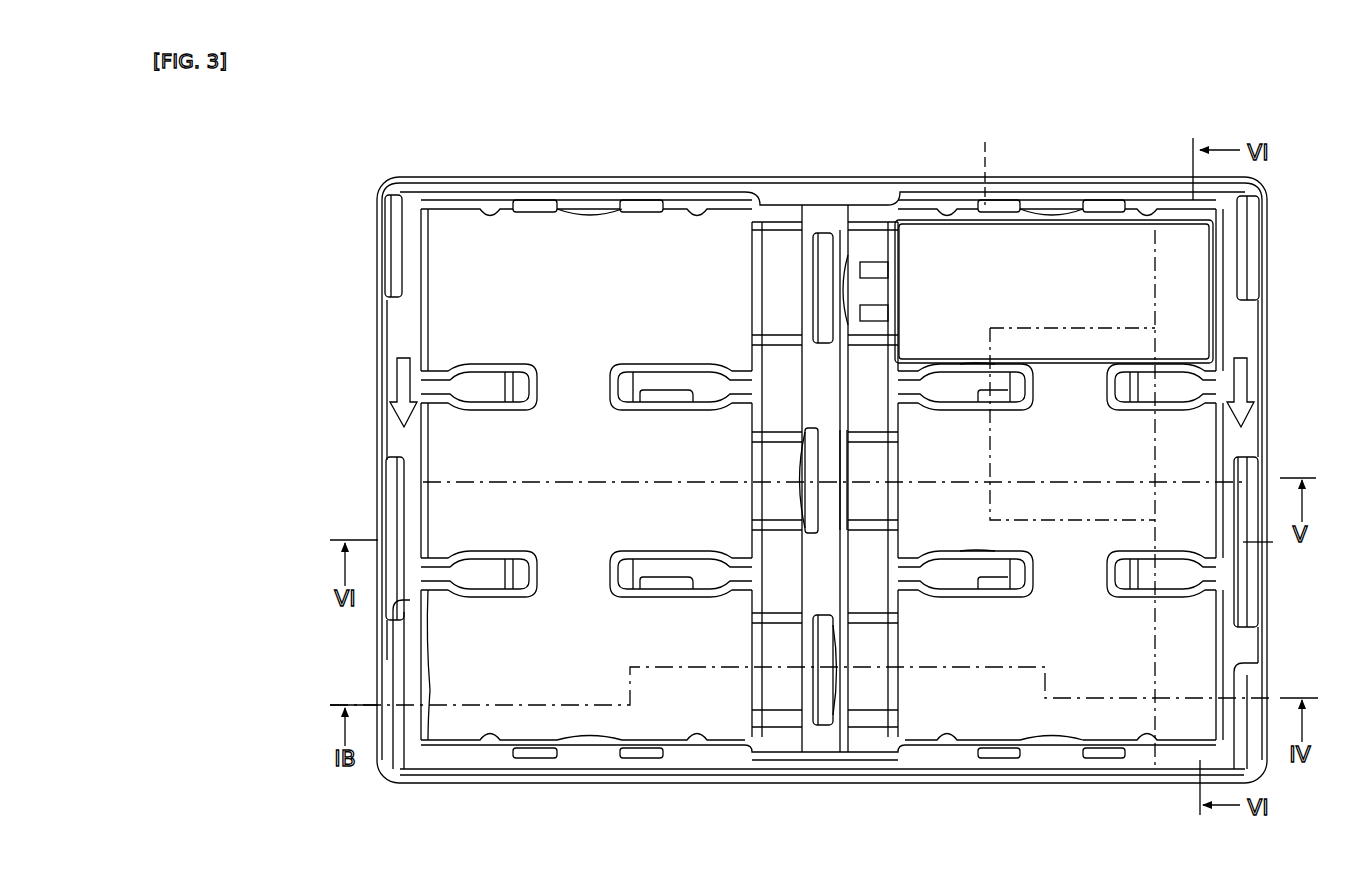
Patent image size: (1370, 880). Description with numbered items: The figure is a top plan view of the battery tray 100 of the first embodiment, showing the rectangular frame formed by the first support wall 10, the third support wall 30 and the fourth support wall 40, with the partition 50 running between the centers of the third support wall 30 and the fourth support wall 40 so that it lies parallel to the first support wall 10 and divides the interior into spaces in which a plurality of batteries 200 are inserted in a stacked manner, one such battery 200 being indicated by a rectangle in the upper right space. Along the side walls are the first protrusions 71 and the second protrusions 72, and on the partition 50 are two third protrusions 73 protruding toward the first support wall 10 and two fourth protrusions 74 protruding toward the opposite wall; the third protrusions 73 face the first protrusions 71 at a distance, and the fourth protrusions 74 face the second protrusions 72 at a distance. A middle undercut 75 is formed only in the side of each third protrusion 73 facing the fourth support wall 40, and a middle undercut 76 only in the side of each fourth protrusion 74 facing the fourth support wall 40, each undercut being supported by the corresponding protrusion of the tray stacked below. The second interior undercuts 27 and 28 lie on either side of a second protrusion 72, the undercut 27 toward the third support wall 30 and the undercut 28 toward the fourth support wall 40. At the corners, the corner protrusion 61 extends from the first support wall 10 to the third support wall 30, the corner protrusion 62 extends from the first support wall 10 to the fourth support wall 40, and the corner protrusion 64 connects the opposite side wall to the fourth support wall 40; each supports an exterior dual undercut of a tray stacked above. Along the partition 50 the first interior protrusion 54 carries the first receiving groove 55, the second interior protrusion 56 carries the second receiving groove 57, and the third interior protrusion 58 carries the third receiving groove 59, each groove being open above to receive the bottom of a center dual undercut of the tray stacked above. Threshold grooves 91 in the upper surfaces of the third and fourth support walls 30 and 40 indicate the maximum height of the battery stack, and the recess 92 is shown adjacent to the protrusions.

The first support wall 10 is at (1276, 360).
The second interior undercut 27 is at (430, 668).
The second interior undercut 28 is at (430, 290).
The third support wall 30 is at (591, 786).
The fourth support wall 40 is at (668, 173).
The partition 50 is at (855, 463).
The first interior protrusion 54 is at (842, 642).
The first receiving groove 55 is at (850, 680).
The second interior protrusion 56 is at (814, 286).
The second receiving groove 57 is at (838, 287).
The third interior protrusion 58 is at (832, 500).
The third receiving groove 59 is at (800, 467).
The corner protrusion 61 is at (1258, 681).
The corner protrusion 62 is at (1258, 246).
The corner protrusion 64 is at (383, 234).
The first protrusion 71 is at (1165, 384).
The second protrusion 72 is at (503, 384).
The third protrusion 73 is at (975, 380).
The fourth protrusion 74 is at (645, 380).
The middle undercut 75 is at (663, 380).
The middle undercut 76 is at (992, 372).
The threshold groove 91 is at (985, 160).
The clip recess 92 is at (645, 408).
The battery tray 100 is at (1142, 113).
The battery 200 is at (1061, 214).